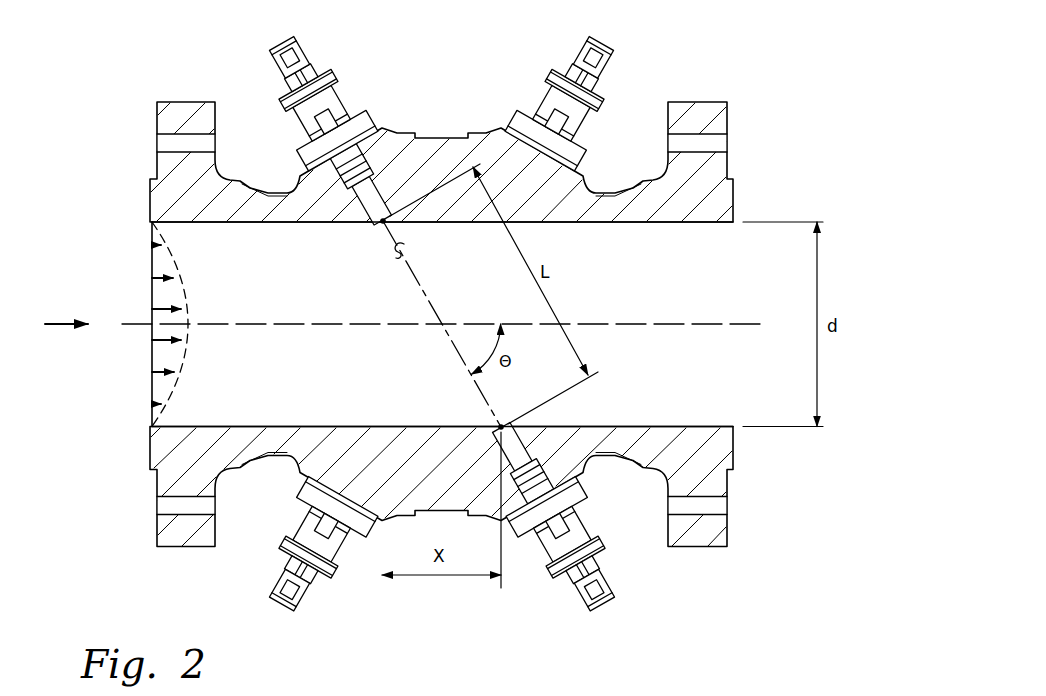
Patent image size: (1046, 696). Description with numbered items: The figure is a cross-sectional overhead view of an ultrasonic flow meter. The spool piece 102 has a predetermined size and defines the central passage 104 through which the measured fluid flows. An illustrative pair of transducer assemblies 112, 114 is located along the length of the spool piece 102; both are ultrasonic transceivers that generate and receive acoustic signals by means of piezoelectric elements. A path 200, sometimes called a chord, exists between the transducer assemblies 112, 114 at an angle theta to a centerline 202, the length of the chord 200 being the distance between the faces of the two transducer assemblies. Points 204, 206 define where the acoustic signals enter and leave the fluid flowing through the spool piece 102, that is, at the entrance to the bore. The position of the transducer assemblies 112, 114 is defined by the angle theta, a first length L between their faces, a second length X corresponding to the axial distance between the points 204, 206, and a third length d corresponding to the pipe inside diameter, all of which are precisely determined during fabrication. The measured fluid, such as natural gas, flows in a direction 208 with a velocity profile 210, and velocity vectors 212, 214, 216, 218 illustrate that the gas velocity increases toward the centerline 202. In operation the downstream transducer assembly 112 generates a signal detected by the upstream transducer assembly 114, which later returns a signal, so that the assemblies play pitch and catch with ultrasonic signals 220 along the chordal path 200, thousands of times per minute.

The spool piece 102 is at (438, 137).
The central passage 104 is at (697, 388).
The transducer assembly 112 is at (577, 596).
The transducer assembly 114 is at (338, 92).
The path 200 is at (456, 348).
The centerline 202 is at (667, 323).
The point 204 is at (502, 425).
The point 206 is at (381, 226).
The direction 208 is at (57, 323).
The velocity profile 210 is at (186, 292).
The velocity vector 212 is at (155, 277).
The velocity vector 214 is at (153, 308).
The velocity vector 216 is at (157, 341).
The velocity vector 218 is at (160, 373).
The ultrasonic signals 220 is at (405, 244).